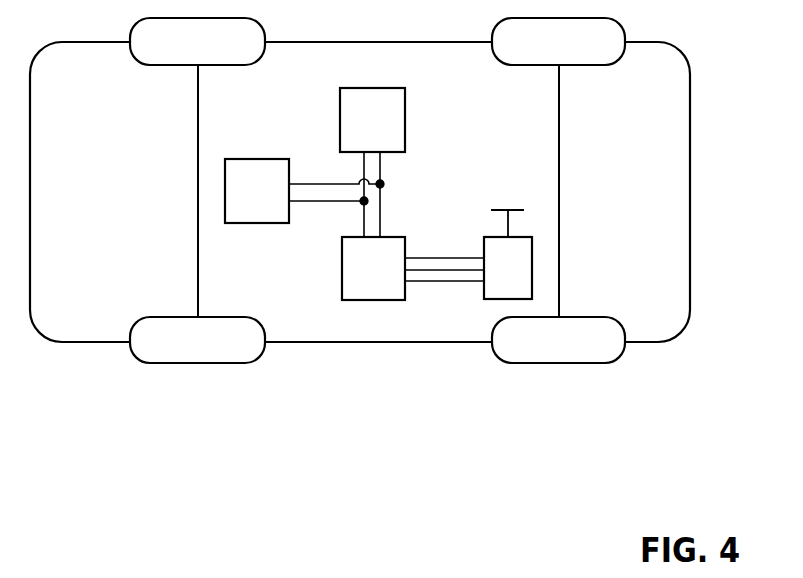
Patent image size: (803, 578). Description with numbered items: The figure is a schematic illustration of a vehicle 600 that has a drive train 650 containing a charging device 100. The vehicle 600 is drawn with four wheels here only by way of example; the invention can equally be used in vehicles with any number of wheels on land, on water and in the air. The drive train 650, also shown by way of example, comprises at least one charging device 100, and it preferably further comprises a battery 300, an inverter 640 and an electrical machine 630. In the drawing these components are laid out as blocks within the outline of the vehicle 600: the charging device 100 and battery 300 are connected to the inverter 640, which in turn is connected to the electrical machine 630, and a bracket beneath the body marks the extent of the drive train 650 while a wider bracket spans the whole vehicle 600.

The charging device 100 is at (252, 172).
The battery 300 is at (392, 118).
The vehicle 600 is at (693, 482).
The electrical machine 630 is at (522, 271).
The inverter 640 is at (352, 270).
The drive train 650 is at (559, 403).